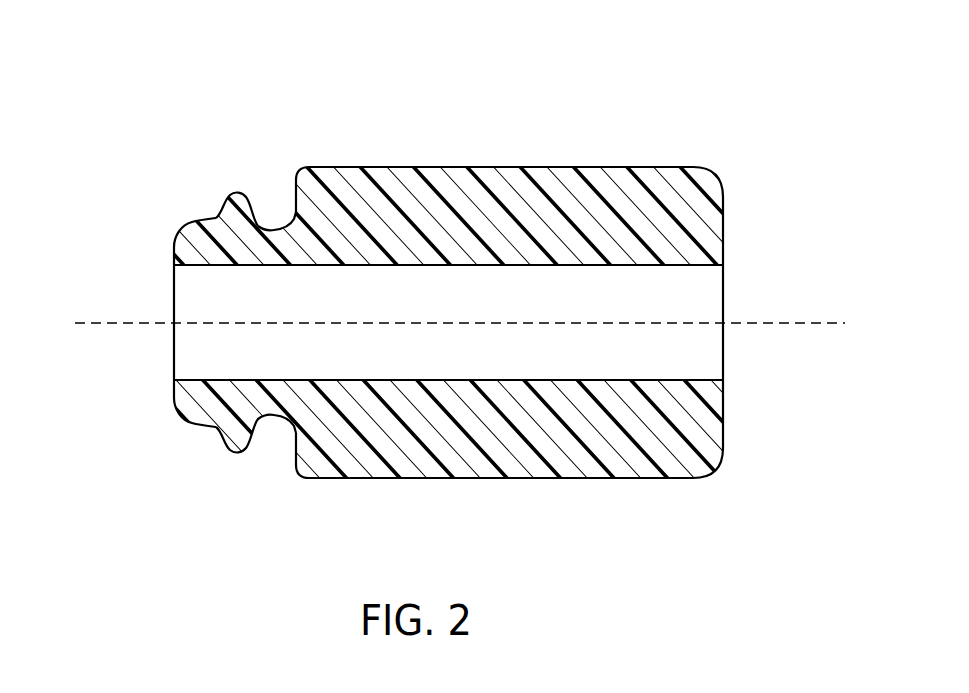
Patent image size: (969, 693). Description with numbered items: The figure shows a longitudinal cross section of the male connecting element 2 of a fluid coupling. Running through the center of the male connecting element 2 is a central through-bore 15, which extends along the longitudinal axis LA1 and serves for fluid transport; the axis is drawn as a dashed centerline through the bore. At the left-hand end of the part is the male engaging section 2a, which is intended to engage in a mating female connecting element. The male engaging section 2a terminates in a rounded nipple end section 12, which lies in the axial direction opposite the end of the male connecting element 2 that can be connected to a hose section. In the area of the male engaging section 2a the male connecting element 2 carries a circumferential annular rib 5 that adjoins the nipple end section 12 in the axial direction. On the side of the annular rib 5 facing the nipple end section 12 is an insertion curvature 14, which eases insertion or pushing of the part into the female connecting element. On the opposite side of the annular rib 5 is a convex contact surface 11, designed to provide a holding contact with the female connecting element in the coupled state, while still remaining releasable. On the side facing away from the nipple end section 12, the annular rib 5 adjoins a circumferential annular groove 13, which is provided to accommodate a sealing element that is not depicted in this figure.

The male connecting element 2 is at (134, 71).
The male engaging section 2a is at (182, 201).
The annular rib 5 is at (233, 192).
The circumferential annular groove 13 is at (268, 226).
The convex contact surface 11 is at (259, 464).
The nipple end section 12 is at (173, 357).
The insertion curvature 14 is at (208, 446).
The central through-bore 15 is at (703, 284).
The longitudinal axis LA1 is at (460, 305).